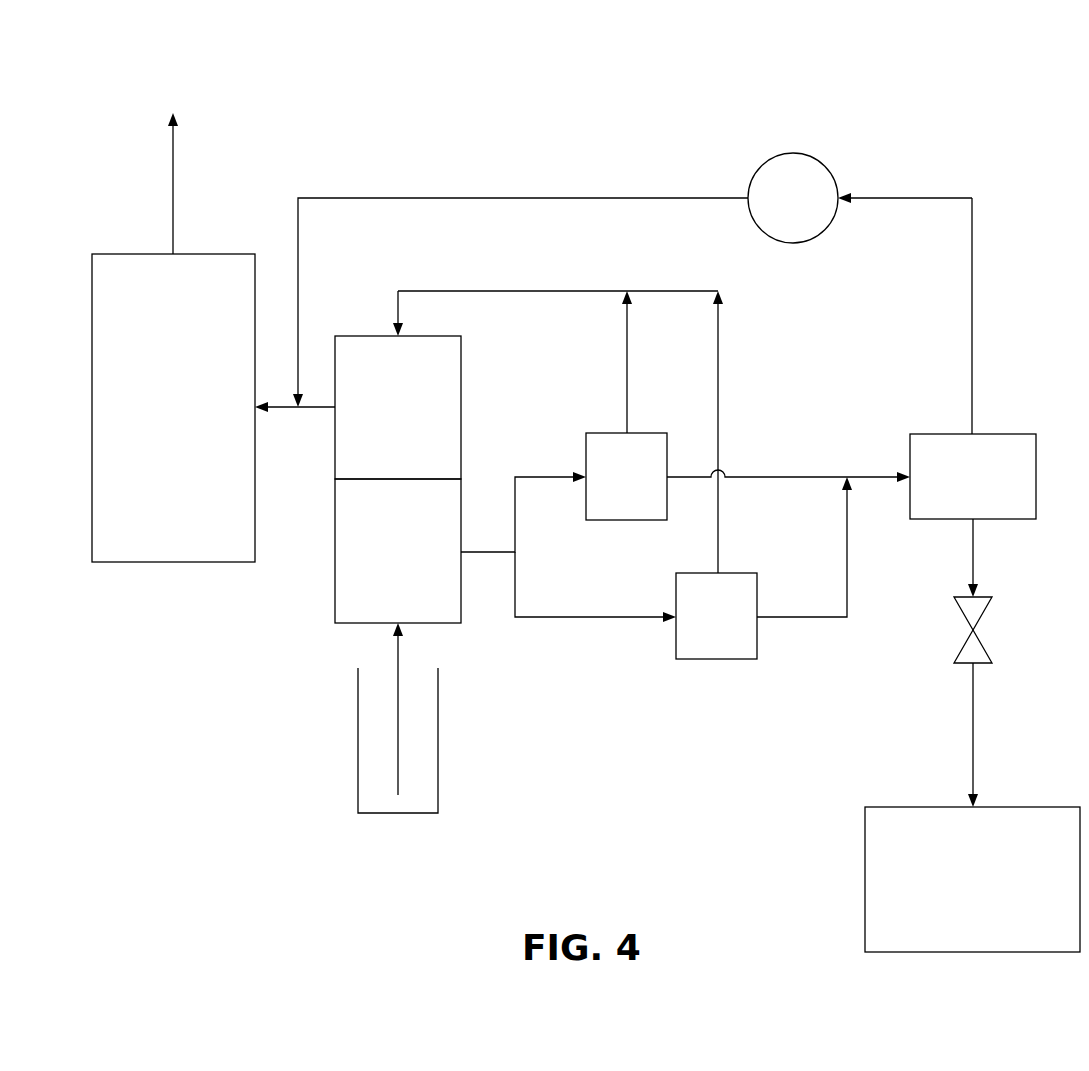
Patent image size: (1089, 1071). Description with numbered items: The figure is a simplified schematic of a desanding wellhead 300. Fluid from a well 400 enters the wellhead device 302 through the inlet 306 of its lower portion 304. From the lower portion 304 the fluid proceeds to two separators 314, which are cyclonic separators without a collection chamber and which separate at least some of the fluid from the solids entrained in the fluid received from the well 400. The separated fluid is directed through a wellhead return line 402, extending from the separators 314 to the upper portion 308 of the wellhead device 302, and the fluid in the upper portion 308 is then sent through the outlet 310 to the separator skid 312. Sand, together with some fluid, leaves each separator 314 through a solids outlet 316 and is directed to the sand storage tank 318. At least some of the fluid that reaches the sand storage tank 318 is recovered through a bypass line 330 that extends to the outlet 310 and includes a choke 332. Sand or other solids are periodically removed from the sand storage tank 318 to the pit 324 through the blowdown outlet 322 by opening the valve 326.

The desanding wellhead 300 is at (343, 88).
The wellhead device 302 is at (302, 613).
The lower portion 304 is at (398, 551).
The inlet 306 is at (407, 626).
The upper portion 308 is at (398, 407).
The outlet 310 is at (318, 410).
The separator skid 312 is at (173, 337).
The separators 314 is at (671, 546).
The solids outlet 316 is at (672, 480).
The sand storage tank 318 is at (973, 476).
The blowdown outlet 322 is at (977, 553).
The pit 324 is at (972, 879).
The valve 326 is at (985, 647).
The bypass line 330 is at (620, 196).
The choke 332 is at (860, 293).
The well 400 is at (357, 748).
The wellhead return line 402 is at (500, 288).